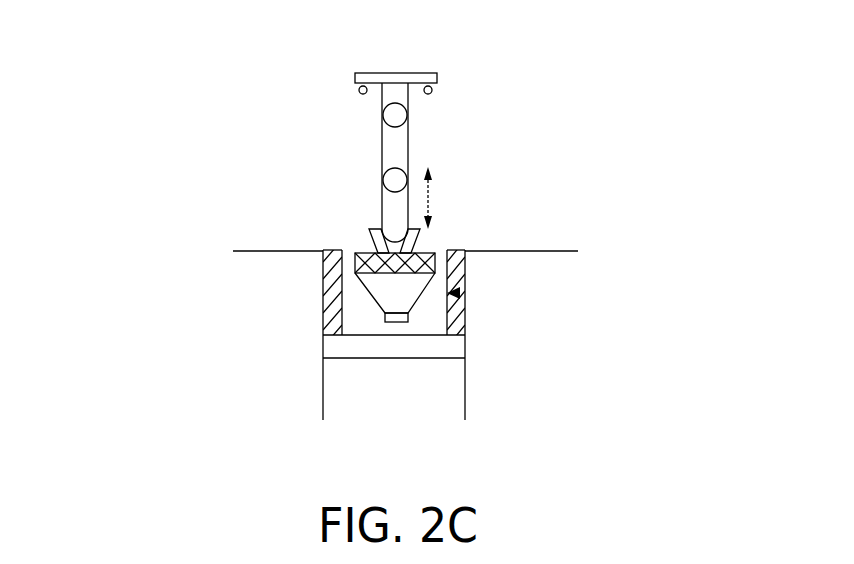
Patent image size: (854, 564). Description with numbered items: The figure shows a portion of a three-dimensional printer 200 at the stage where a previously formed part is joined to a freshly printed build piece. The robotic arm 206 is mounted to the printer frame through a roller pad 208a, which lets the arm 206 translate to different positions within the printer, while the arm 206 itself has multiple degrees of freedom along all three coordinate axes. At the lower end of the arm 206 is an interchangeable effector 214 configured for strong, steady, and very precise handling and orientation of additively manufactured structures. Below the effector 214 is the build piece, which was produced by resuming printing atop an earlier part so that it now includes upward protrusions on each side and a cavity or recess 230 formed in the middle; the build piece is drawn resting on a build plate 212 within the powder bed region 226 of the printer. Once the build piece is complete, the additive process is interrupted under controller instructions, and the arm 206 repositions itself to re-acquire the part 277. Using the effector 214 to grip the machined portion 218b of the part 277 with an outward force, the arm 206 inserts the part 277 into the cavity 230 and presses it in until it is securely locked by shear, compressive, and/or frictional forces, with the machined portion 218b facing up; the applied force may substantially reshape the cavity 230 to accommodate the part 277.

The 3-D printer 200 is at (231, 54).
The roller pad 208a is at (345, 73).
The robotic arm 206 is at (382, 131).
The effector 214 is at (369, 233).
The machined portion 218b is at (418, 251).
The powder bed region 226 is at (342, 289).
The cavity or recess 230 is at (408, 322).
The part 277 is at (392, 292).
The build plate 212 is at (382, 360).